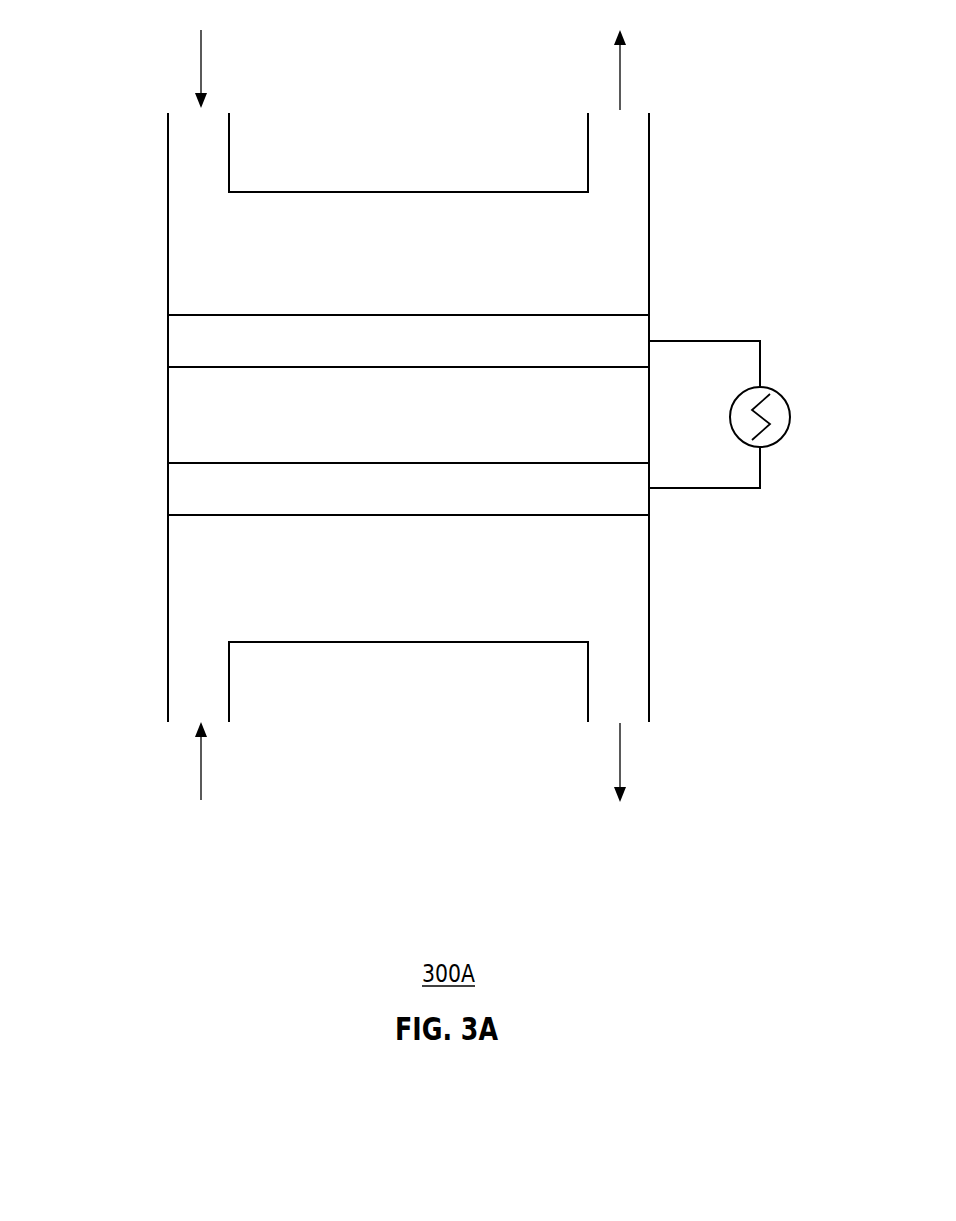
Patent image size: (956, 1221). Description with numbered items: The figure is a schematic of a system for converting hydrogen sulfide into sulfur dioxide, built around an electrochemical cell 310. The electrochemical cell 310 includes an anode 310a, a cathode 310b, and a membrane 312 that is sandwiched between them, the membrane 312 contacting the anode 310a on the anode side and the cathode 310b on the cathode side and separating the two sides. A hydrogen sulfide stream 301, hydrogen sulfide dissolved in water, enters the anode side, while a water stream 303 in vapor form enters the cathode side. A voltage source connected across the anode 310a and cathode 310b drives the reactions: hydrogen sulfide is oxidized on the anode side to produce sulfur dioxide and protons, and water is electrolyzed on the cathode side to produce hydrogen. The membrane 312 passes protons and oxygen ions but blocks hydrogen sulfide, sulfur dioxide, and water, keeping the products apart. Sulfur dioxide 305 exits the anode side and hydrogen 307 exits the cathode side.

The hydrogen sulfide stream 301 is at (201, 85).
The water stream 303 is at (201, 779).
The sulfur dioxide 305 is at (620, 85).
The hydrogen 307 is at (620, 779).
The electrochemical cell 310 is at (420, 161).
The anode 310a is at (645, 329).
The cathode 310b is at (645, 500).
The membrane 312 is at (173, 417).